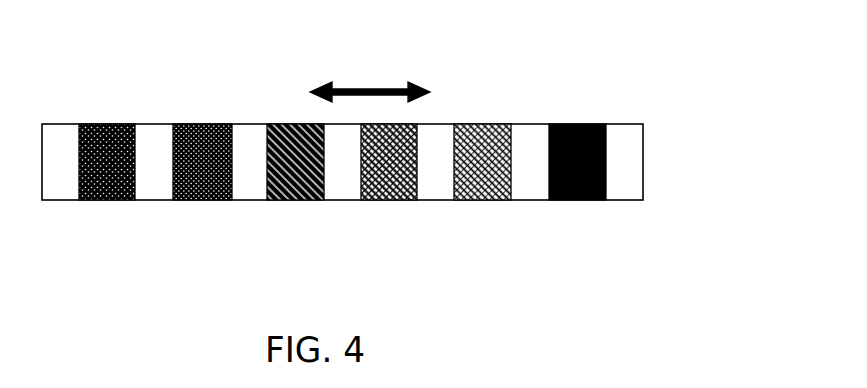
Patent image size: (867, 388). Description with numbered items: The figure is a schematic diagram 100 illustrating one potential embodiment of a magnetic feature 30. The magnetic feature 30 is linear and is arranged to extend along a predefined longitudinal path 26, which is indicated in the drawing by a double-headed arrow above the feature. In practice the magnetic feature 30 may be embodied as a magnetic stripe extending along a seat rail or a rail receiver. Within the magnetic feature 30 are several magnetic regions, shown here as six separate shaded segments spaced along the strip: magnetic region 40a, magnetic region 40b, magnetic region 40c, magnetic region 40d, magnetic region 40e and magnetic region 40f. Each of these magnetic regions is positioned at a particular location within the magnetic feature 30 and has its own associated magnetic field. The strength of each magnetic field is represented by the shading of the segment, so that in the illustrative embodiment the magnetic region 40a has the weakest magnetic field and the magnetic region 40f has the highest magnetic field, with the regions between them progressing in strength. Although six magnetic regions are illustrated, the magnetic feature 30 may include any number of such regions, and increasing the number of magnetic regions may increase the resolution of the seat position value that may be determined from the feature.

The schematic diagram 100 is at (754, 104).
The magnetic feature 30 is at (627, 124).
The predefined longitudinal path 26 is at (374, 86).
The magnetic region 40a is at (107, 200).
The magnetic region 40b is at (203, 200).
The magnetic region 40c is at (297, 200).
The magnetic region 40d is at (390, 200).
The magnetic region 40e is at (485, 200).
The magnetic region 40f is at (577, 200).